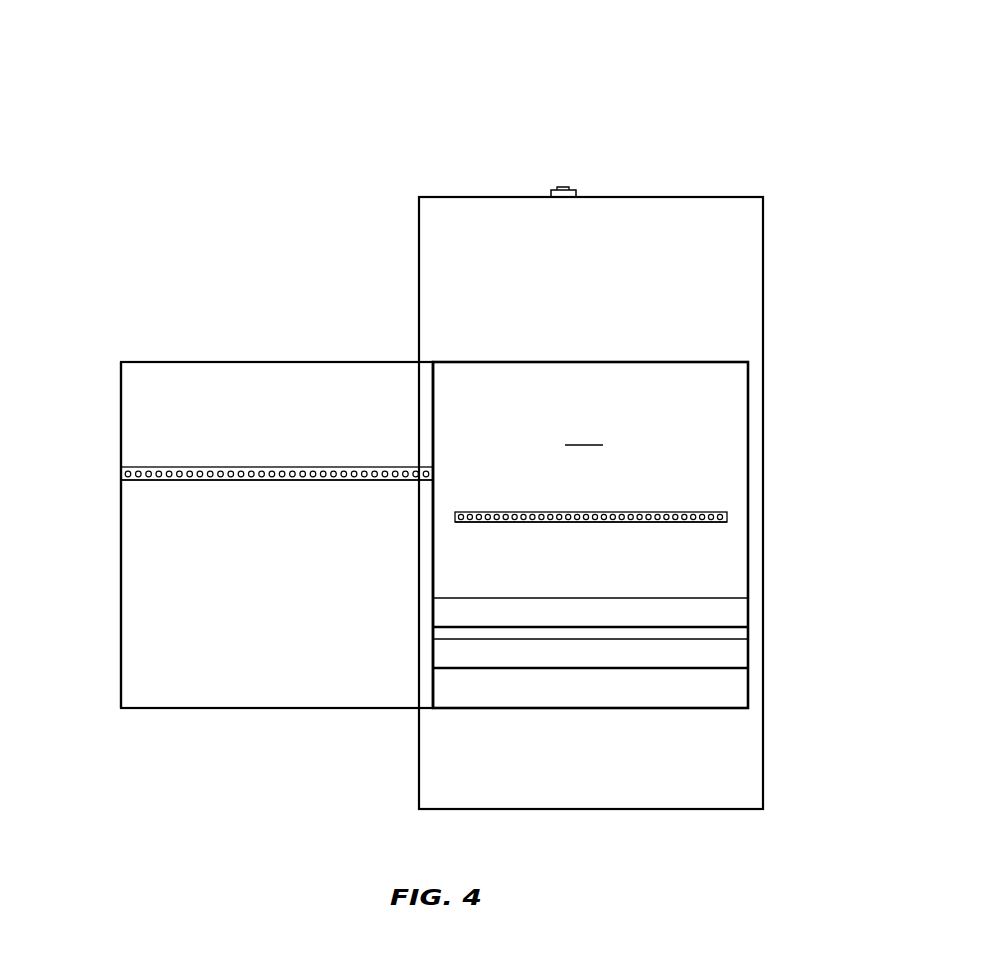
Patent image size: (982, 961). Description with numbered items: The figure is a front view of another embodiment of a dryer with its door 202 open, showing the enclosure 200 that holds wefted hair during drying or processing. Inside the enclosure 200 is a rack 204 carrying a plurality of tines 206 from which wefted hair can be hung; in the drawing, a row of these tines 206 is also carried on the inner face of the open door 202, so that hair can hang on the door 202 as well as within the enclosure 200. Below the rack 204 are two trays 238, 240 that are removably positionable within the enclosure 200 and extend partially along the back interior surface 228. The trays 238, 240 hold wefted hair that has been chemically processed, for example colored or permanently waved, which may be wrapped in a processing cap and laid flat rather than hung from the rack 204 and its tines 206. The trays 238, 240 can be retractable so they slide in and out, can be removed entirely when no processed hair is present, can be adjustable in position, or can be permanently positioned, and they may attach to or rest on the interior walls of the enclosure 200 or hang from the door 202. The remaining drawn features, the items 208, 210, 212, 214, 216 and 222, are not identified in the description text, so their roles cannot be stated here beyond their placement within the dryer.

The enclosure 200 is at (331, 106).
The door 202 is at (197, 375).
The rack 204 is at (132, 467).
The tines 206 is at (127, 474).
The second housing 208 is at (708, 362).
The outer enclosure 210 is at (738, 220).
The outer side wall 212 is at (120, 383).
The partition wall 214 is at (432, 388).
The compartment 216 is at (585, 433).
The first light strip mount 222 is at (165, 480).
The back interior surface 228 is at (683, 522).
The tray 238 is at (733, 653).
The tray 240 is at (733, 613).